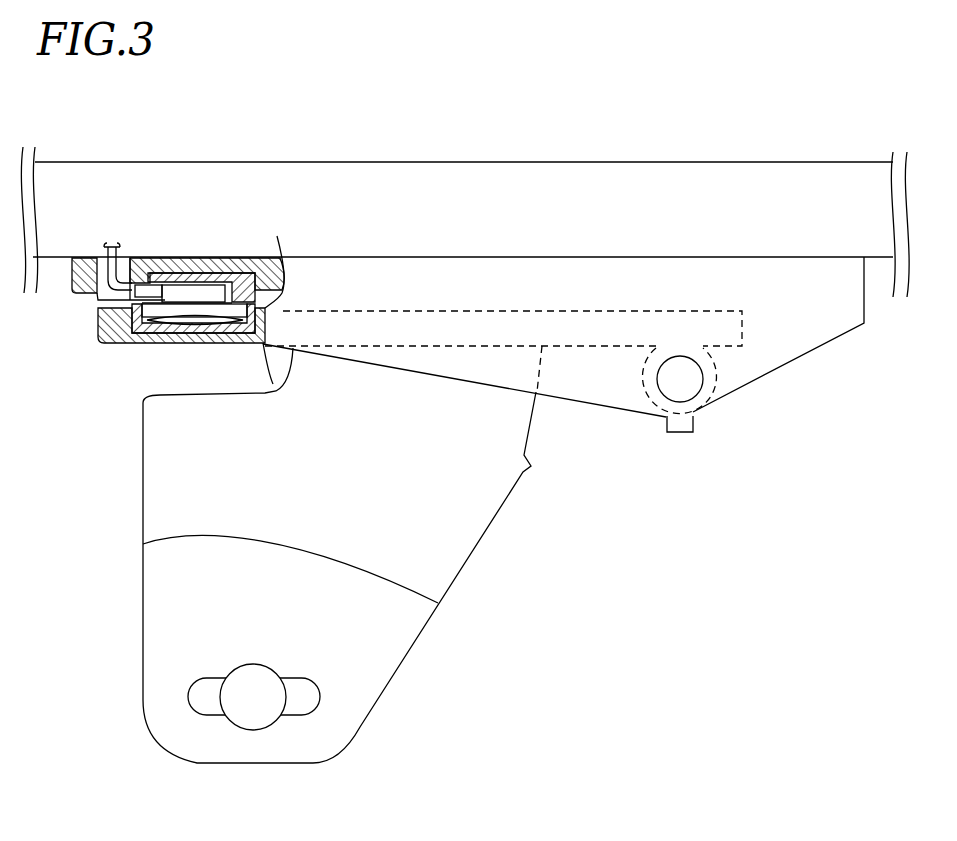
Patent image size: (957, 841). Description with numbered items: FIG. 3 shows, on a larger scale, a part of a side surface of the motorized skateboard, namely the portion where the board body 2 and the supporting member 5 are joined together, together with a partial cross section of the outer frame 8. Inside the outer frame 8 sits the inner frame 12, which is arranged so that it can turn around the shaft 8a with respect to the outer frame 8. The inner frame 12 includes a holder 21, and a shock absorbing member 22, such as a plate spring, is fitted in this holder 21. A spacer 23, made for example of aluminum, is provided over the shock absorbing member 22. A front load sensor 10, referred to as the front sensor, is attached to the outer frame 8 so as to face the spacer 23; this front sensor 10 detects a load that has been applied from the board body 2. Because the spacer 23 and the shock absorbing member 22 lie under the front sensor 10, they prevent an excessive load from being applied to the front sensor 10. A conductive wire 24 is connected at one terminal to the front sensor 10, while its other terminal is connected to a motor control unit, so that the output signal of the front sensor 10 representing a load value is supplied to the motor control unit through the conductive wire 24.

The board body 2 is at (482, 175).
The supporting member 5 is at (445, 527).
The outer frame 8 is at (777, 338).
The shaft 8a is at (688, 385).
The front load sensor 10 is at (193, 290).
The inner frame 12 is at (102, 343).
The holder 21 is at (160, 328).
The shock absorbing member 22 is at (222, 343).
The spacer 23 is at (231, 310).
The conductive wire 24 is at (106, 255).